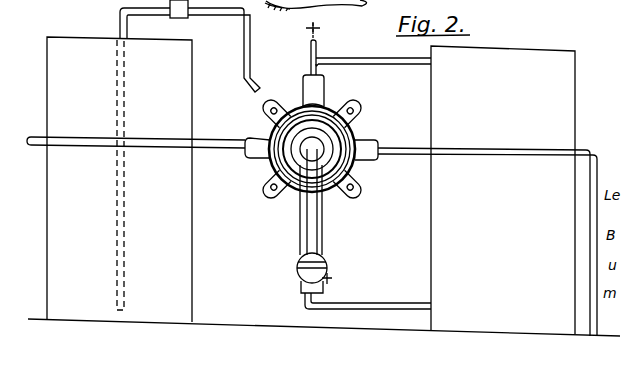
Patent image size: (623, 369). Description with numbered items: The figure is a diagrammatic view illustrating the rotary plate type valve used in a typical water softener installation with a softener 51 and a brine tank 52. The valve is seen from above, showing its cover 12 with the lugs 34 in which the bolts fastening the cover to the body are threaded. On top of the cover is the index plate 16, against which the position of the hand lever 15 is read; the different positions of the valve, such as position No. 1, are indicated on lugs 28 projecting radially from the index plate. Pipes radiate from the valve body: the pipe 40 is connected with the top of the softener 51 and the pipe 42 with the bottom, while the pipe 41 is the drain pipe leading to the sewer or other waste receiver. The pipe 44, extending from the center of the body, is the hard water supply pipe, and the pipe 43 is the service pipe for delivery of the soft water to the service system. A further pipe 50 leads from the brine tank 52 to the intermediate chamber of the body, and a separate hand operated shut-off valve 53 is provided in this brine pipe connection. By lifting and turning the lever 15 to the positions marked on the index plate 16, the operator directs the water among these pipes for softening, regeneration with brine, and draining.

The position No. 1 is at (319, 155).
The cover 12 is at (352, 160).
The hand lever 15 is at (316, 215).
The index plate 16 is at (353, 119).
The lugs 28 is at (326, 98).
The lugs 34 is at (352, 108).
The pipe 40 is at (318, 86).
The drain pipe 41 is at (373, 142).
The pipe 42 is at (352, 307).
The service pipe 43 is at (226, 150).
The hard water supply pipe 44 is at (320, 47).
The pipe 50 is at (252, 92).
The softener 51 is at (563, 128).
The brine tank 52 is at (180, 213).
The shut-off valve 53 is at (184, 18).